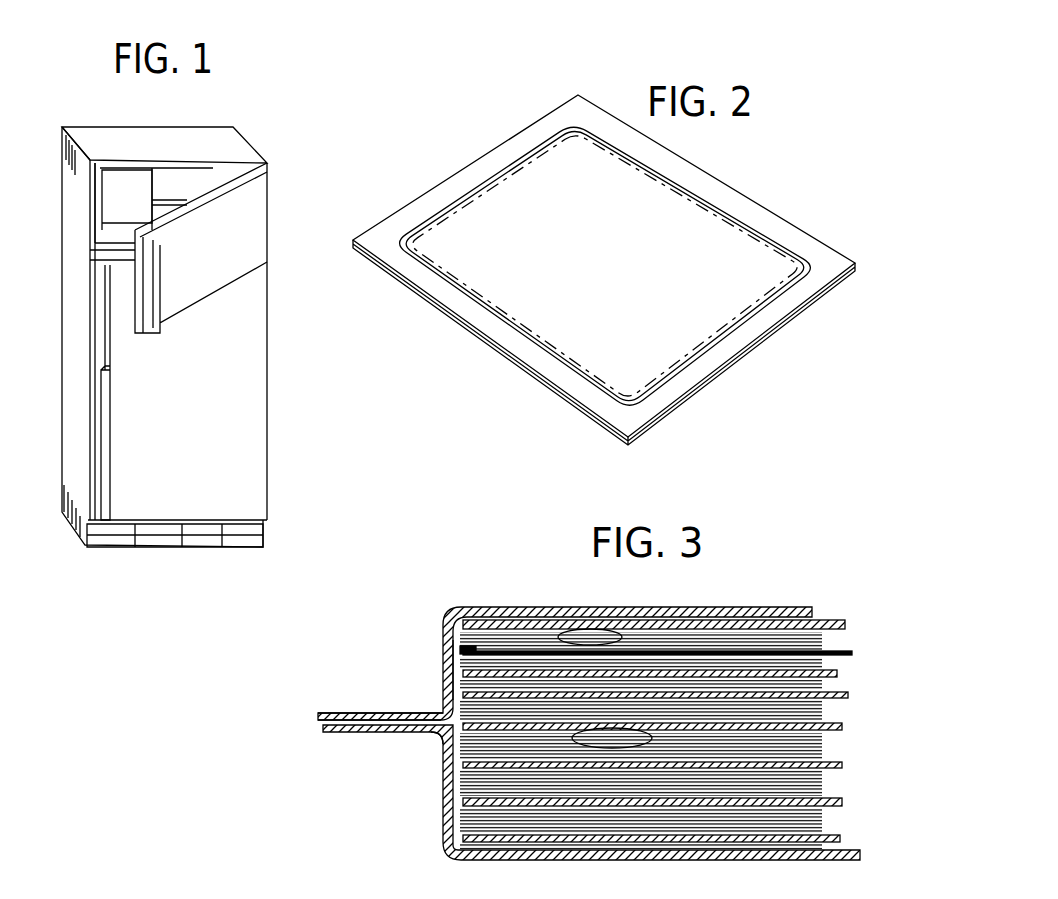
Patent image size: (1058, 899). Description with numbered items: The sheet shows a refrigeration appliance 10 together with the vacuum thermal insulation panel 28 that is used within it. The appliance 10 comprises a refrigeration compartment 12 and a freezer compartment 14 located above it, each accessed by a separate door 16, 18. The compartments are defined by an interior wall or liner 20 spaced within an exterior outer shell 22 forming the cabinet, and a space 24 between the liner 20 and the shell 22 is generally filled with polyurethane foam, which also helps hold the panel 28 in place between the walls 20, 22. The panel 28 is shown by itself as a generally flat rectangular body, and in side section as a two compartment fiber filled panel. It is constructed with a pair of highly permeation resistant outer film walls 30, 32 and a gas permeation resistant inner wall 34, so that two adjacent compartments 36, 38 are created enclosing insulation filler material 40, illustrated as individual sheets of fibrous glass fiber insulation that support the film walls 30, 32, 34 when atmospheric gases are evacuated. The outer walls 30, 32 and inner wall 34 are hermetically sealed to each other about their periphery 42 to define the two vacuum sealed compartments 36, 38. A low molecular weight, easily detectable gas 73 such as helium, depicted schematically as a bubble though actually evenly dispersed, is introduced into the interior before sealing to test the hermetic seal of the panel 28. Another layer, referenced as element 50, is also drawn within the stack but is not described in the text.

In FIG. 1, the refrigeration appliance 10 is at (257, 140).
In FIG. 1, the refrigeration compartment 12 is at (235, 452).
In FIG. 1, the freezer compartment 14 is at (187, 187).
In FIG. 1, the door 16 is at (127, 410).
In FIG. 1, the door 18 is at (248, 242).
In FIG. 1, the interior wall or liner 20 is at (112, 190).
In FIG. 1, the exterior outer shell 22 is at (70, 193).
In FIG. 1, the space 24 is at (100, 177).
In FIG. 2, the vacuum thermal insulation panel 28 is at (717, 227).
In FIG. 3, the vacuum thermal insulation panel 28 is at (797, 608).
In FIG. 3, the outer film wall 30 is at (463, 605).
In FIG. 3, the outer film wall 32 is at (483, 860).
In FIG. 3, the inner wall 34 is at (467, 650).
In FIG. 3, the compartment 36 is at (460, 662).
In FIG. 3, the compartment 38 is at (443, 750).
In FIG. 3, the insulation filler material 40 is at (663, 640).
In FIG. 3, the periphery 42 is at (377, 715).
In FIG. 3, the getter layer 50 is at (837, 653).
In FIG. 3, the gas 73 is at (590, 643).